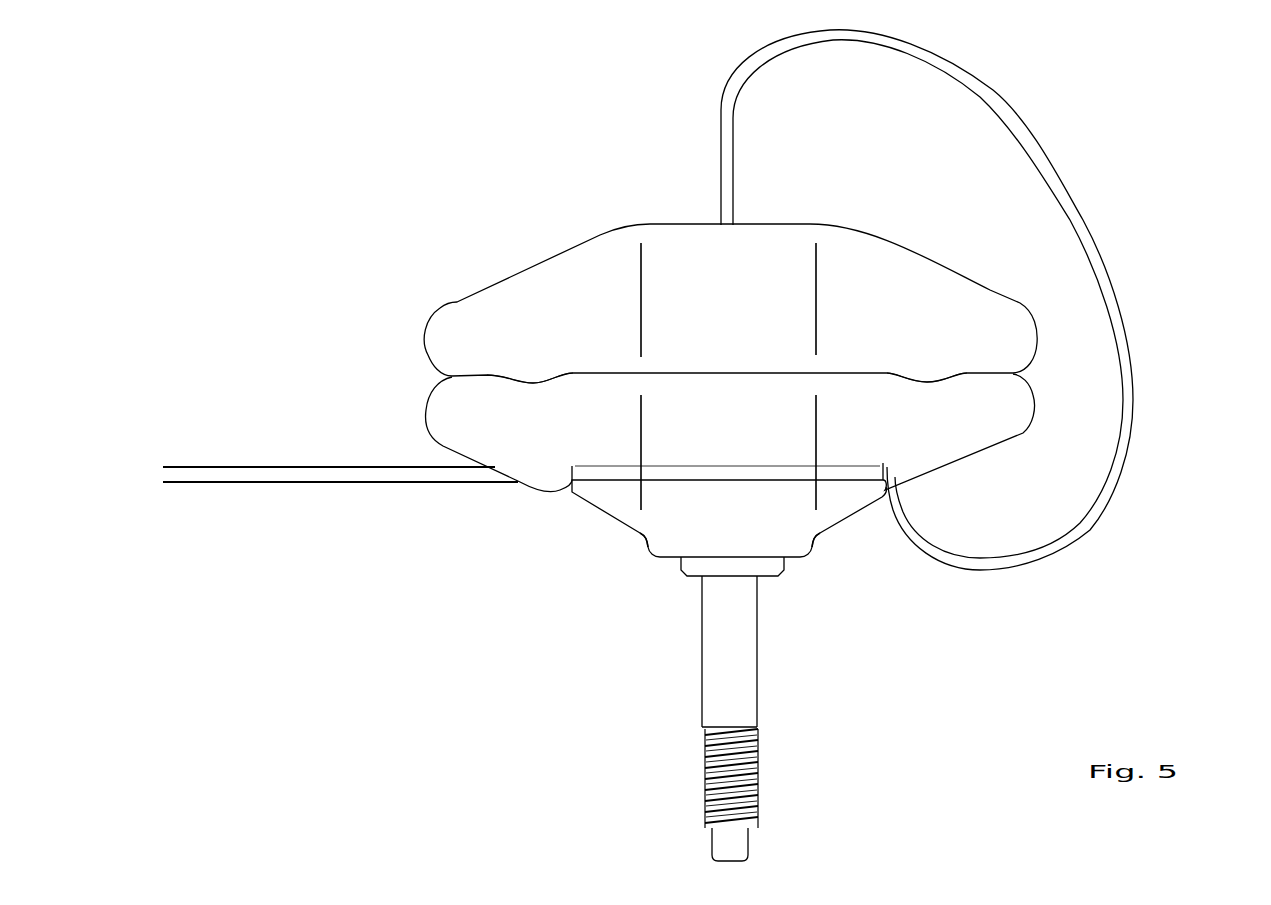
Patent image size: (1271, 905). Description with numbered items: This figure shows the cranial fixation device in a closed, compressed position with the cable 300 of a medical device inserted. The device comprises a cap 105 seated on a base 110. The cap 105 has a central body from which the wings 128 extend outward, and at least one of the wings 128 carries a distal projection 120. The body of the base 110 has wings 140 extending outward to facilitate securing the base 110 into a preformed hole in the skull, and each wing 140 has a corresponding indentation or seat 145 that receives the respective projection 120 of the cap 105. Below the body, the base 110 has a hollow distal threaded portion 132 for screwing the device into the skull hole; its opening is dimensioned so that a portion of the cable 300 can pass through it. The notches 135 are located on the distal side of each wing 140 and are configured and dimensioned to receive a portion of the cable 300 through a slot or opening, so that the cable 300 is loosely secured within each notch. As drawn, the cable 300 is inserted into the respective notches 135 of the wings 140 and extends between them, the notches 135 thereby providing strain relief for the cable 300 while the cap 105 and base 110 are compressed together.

The cap 105 is at (530, 260).
The base 110 is at (422, 435).
The wings 128 is at (886, 285).
The distal projection 120 is at (930, 370).
The seat 145 is at (938, 375).
The cable 300 is at (1137, 432).
The wings 140 is at (550, 445).
The notches 135 is at (922, 440).
The distal threaded portion 132 is at (757, 763).